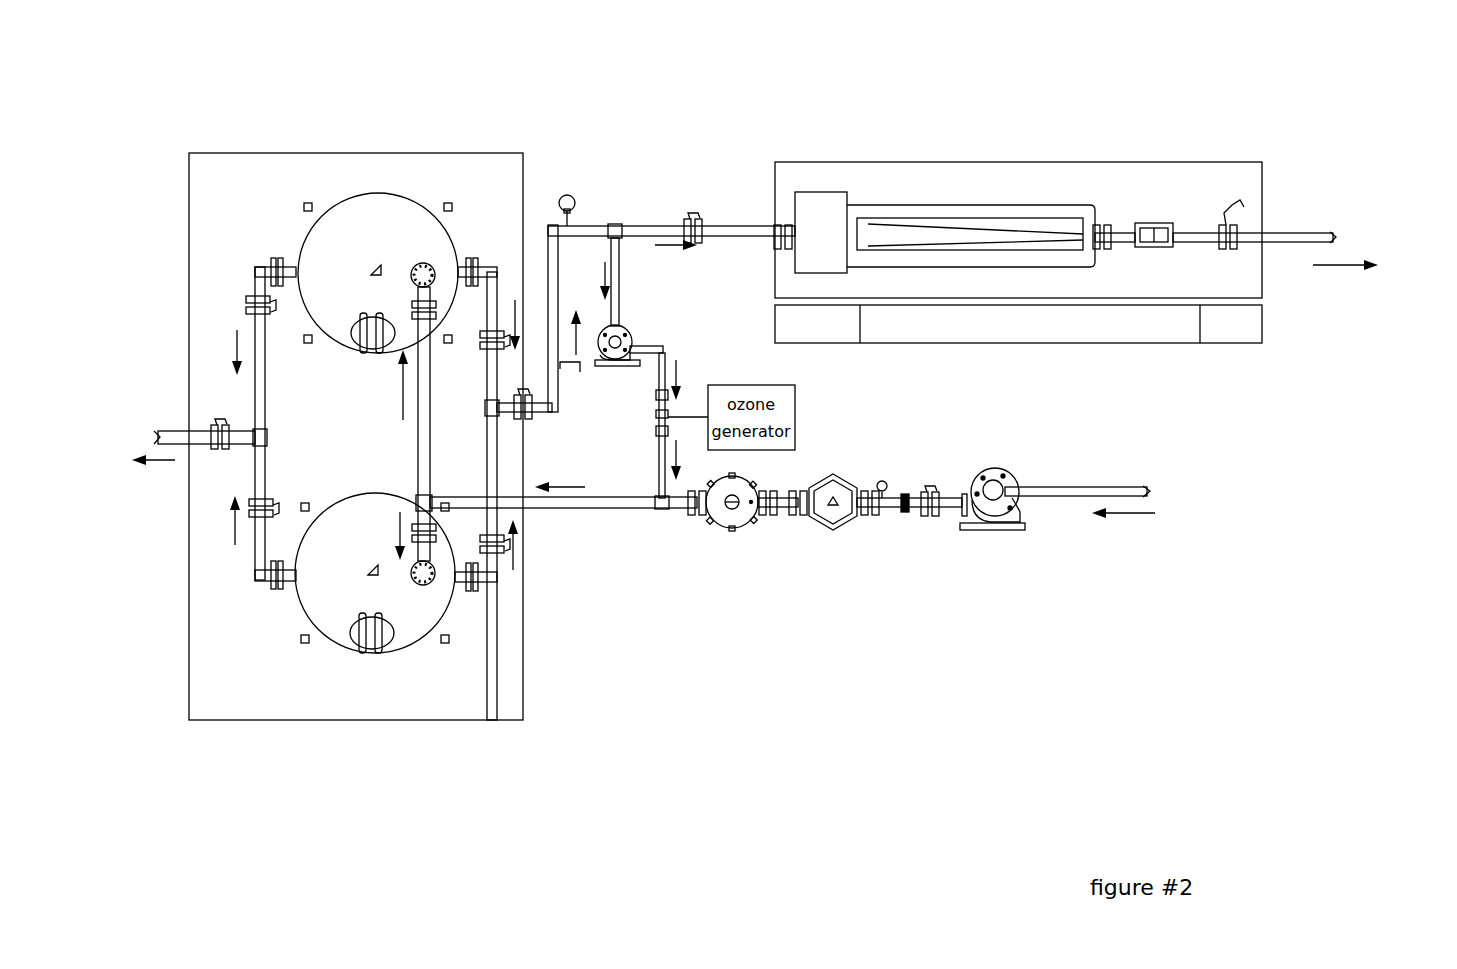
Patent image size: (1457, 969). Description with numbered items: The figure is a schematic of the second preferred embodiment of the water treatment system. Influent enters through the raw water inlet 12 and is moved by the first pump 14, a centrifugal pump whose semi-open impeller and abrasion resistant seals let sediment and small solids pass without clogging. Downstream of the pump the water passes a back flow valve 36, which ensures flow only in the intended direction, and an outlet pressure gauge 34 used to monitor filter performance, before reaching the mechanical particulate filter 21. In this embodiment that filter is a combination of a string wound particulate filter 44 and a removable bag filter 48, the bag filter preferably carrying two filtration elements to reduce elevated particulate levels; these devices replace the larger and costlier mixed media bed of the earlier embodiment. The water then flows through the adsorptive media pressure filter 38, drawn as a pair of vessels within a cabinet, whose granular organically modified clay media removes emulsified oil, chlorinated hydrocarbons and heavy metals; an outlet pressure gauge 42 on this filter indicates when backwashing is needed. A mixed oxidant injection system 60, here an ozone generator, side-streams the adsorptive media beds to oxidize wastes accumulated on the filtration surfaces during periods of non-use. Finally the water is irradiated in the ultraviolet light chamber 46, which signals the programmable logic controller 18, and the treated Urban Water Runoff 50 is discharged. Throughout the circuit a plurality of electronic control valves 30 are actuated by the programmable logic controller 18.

The raw water inlet 12 is at (1148, 490).
The first pump 14 is at (634, 337).
The programmable logic controller 18 is at (1122, 343).
The mechanical particulate filter 21 is at (773, 600).
The electronic control valves 30 is at (245, 300).
The outlet pressure gauge 34 is at (882, 481).
The back flow valves 36 is at (906, 494).
The adsorptive media pressure filter 38 is at (188, 195).
The outlet pressure gauge 42 is at (570, 197).
The string wound particulate filter 44 is at (732, 537).
The ultraviolet light chamber 46 is at (1038, 162).
The removable bag filter 48 is at (833, 533).
The treated Urban Water Runoff 50 is at (1309, 201).
The mixed oxidant injection system 60 is at (650, 499).